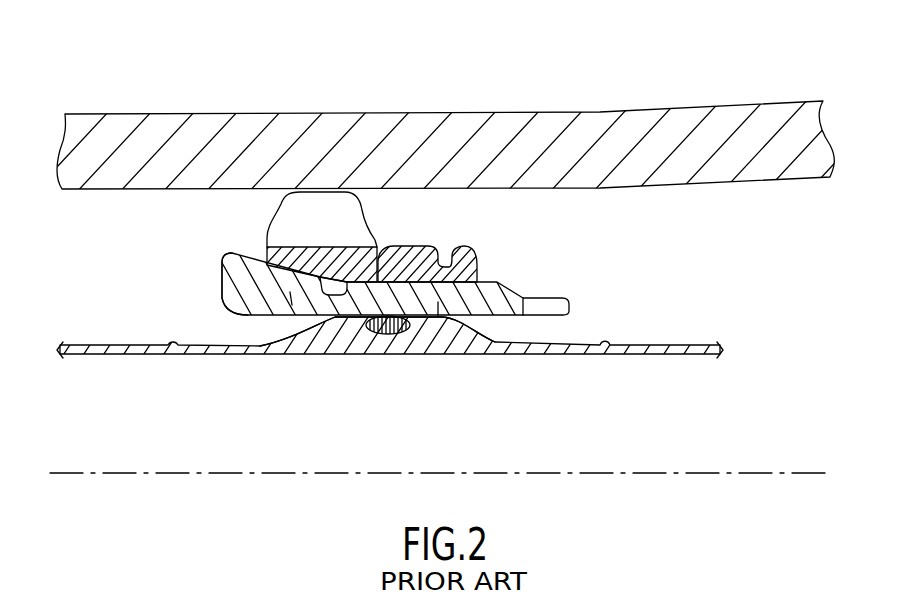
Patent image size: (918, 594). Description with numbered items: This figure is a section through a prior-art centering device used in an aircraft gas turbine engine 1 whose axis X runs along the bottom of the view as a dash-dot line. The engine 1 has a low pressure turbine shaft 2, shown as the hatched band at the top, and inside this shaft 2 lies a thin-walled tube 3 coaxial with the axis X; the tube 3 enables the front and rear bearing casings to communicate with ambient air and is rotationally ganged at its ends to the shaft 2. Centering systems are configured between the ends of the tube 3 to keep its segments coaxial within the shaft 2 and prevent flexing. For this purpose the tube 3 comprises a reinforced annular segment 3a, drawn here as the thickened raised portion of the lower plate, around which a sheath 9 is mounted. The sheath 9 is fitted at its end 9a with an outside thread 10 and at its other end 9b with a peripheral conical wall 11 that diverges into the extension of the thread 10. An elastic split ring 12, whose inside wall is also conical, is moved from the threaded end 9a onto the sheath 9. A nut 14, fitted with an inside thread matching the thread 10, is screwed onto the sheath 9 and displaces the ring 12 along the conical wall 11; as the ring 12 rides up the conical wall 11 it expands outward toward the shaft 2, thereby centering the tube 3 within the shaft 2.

The aircraft gas turbine engine 1 is at (254, 59).
The low pressure turbine shaft 2 is at (162, 128).
The tube 3 is at (103, 358).
The reinforced annular segment 3a is at (343, 343).
The sheath 9 is at (380, 333).
The threaded end of the sheath 9a is at (438, 302).
The other end of the sheath 9b is at (290, 292).
The outside thread 10 is at (483, 278).
The peripheral conical wall 11 is at (261, 287).
The elastic split ring 12 is at (290, 247).
The nut 14 is at (420, 247).
The axis X is at (654, 472).